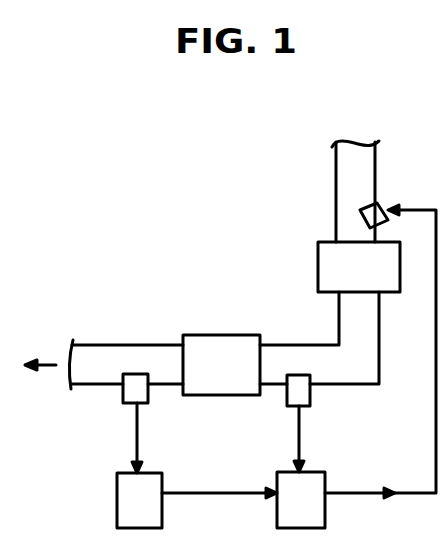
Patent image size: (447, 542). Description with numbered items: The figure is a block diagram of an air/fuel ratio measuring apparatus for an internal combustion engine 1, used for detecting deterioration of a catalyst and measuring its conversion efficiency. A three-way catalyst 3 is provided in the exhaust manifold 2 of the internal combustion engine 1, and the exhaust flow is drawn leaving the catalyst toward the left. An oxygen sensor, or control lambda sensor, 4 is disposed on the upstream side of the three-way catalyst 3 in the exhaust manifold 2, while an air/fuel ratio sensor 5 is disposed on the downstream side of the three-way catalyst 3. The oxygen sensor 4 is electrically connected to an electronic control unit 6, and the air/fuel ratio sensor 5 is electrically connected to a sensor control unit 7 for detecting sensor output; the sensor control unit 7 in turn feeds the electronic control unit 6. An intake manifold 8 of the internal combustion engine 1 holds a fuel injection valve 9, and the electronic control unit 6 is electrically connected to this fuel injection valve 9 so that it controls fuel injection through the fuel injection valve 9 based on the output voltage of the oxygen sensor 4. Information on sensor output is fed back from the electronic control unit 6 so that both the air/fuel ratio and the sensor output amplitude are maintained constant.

The internal combustion engine 1 is at (316, 257).
The exhaust manifold 2 is at (368, 358).
The three-way catalyst 3 is at (250, 345).
The oxygen sensor 4 is at (310, 395).
The air/fuel ratio sensor 5 is at (149, 400).
The electronic control unit 6 is at (325, 500).
The sensor control unit 7 is at (162, 507).
The intake manifold 8 is at (345, 185).
The fuel injection valve 9 is at (380, 206).